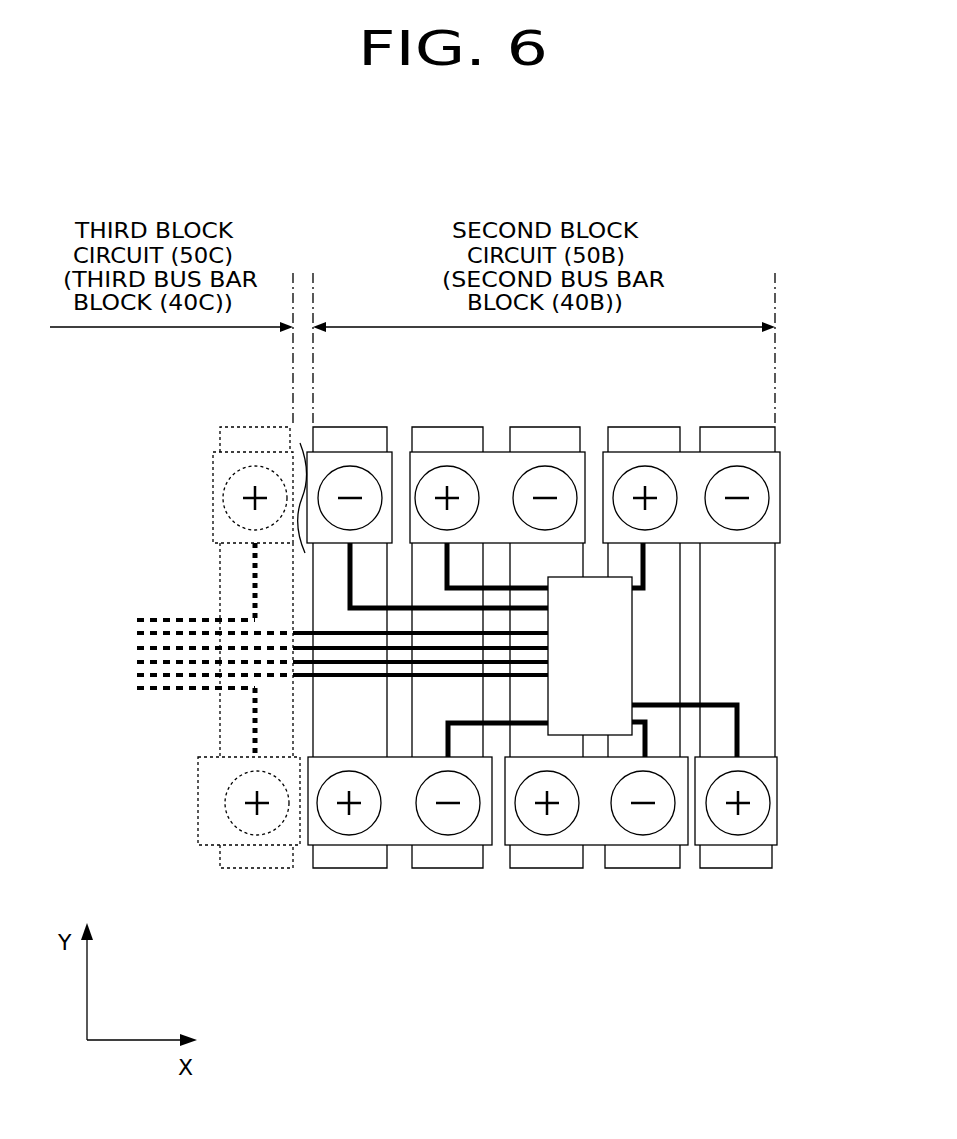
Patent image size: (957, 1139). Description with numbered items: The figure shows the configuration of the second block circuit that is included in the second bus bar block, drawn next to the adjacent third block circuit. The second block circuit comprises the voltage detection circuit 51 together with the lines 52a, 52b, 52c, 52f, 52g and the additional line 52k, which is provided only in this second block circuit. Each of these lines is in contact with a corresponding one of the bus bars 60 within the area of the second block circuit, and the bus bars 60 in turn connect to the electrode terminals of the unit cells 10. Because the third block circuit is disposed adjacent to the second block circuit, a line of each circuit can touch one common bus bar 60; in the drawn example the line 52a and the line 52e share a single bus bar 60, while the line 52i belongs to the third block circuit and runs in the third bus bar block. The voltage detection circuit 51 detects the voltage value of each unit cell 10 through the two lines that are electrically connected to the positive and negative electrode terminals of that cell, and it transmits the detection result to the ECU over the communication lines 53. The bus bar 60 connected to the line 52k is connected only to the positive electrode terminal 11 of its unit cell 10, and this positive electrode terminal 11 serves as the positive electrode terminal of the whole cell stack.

The unit cell 10 is at (501, 921).
The positive electrode terminal 11 is at (755, 790).
The voltage detection circuit 51 is at (590, 656).
The line 52a is at (347, 574).
The line 52b is at (450, 562).
The line 52c is at (648, 560).
The line 52e is at (253, 583).
The line 52f is at (448, 727).
The line 52g is at (647, 727).
The line 52i is at (255, 723).
The additional line 52k is at (735, 710).
The communication lines 53 is at (148, 620).
The bus bar 60 is at (222, 463).